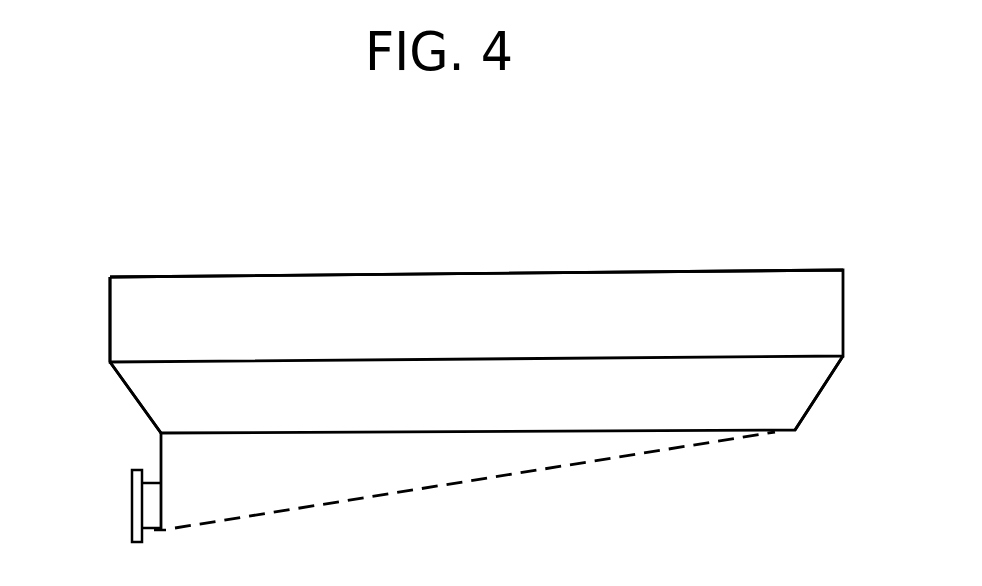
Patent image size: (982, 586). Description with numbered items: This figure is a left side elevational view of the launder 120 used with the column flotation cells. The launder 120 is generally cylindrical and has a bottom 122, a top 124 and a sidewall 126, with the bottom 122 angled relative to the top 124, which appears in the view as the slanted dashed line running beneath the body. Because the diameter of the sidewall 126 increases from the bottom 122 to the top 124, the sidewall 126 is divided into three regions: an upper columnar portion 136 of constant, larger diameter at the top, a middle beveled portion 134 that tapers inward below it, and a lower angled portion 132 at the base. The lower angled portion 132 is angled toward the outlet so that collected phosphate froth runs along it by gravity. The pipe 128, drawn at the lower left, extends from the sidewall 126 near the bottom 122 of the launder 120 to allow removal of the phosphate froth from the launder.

The launder 120 is at (668, 160).
The bottom 122 is at (478, 481).
The top 124 is at (707, 271).
The sidewall 126 is at (832, 400).
The outlet pipe 128 is at (148, 498).
The lower angled portion 132 is at (158, 453).
The middle beveled portion 134 is at (137, 404).
The upper columnar portion 136 is at (110, 286).